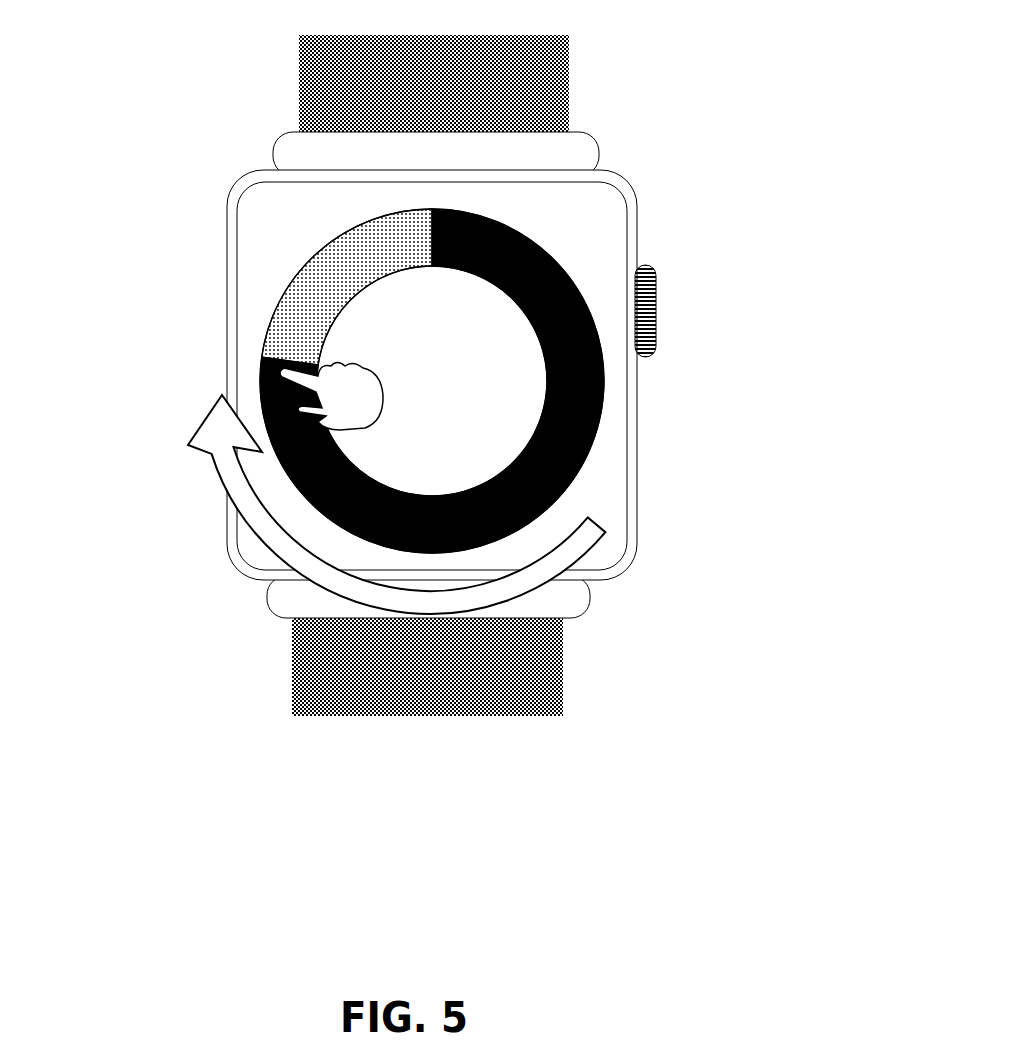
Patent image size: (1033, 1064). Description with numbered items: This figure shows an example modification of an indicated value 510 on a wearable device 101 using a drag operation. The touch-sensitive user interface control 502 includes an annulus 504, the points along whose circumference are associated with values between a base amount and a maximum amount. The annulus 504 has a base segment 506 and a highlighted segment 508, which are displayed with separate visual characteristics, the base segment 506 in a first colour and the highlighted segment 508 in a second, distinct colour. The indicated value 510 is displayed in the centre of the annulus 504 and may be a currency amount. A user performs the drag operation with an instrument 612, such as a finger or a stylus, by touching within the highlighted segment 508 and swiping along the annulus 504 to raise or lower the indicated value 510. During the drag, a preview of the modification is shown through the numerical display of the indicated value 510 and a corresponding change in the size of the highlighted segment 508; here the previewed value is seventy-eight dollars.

The wearable device 101 is at (795, 172).
The user interface control 502 is at (248, 221).
The annulus 504 is at (271, 510).
The base segment 506 is at (254, 267).
The highlighted segment 508 is at (606, 458).
The indicated value 510 is at (490, 369).
The instrument 612 is at (401, 434).